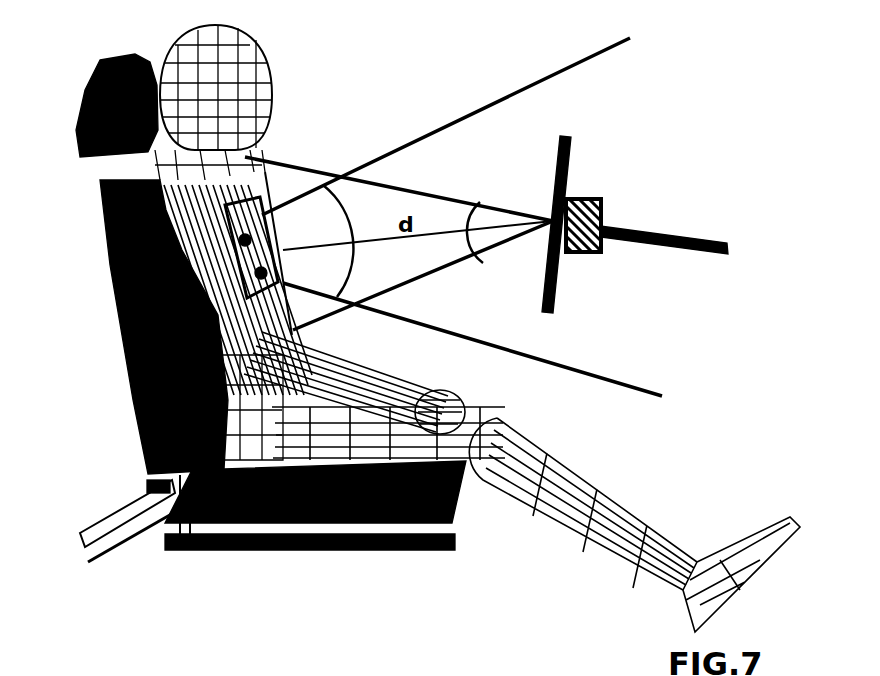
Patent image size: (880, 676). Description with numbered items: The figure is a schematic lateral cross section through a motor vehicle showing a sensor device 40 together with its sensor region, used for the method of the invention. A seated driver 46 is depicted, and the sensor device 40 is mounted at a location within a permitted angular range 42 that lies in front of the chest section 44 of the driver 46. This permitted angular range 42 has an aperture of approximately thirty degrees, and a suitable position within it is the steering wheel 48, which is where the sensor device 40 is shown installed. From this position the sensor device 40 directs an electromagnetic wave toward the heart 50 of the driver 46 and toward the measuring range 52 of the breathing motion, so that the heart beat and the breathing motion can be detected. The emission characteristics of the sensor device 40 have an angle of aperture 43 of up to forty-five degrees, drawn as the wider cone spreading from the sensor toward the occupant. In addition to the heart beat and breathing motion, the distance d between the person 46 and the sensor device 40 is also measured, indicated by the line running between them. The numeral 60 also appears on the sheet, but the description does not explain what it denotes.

The sensor device 40 is at (603, 209).
The permitted angular range 42 is at (353, 231).
The angle of aperture 43 is at (466, 230).
The chest section 44 is at (262, 197).
The driver 46 is at (268, 72).
The steering wheel 48 is at (572, 151).
The heart 50 is at (285, 318).
The measuring range of breathing motion 52 is at (217, 325).
The vehicle floor 60 is at (54, 667).